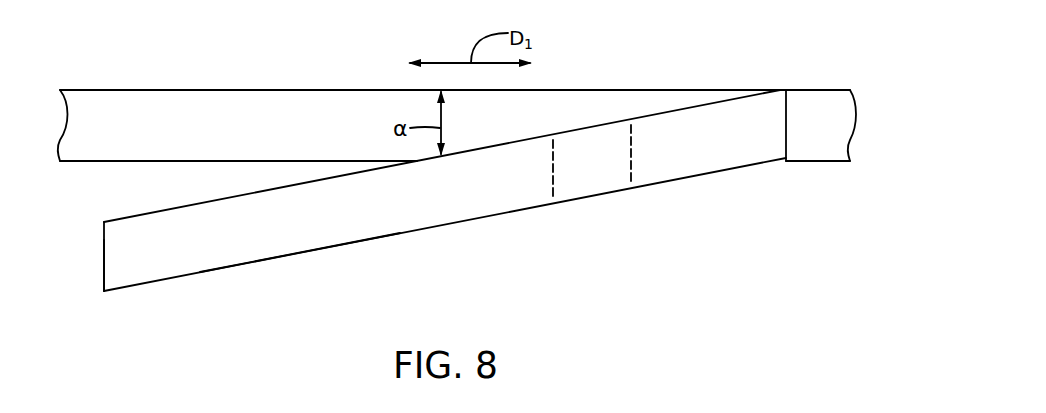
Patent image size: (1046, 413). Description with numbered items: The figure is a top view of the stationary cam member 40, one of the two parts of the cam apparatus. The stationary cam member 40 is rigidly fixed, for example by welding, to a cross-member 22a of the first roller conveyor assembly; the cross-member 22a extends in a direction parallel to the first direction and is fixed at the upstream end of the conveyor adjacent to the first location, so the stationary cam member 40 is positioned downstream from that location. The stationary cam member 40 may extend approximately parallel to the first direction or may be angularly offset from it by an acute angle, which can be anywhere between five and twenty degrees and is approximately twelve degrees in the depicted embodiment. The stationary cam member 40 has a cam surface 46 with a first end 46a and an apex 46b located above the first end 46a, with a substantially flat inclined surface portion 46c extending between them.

The stationary cam member 40 is at (457, 176).
The cross-member 22a is at (219, 128).
The cam surface 46 is at (424, 207).
The first end 46a is at (117, 259).
The apex 46b is at (590, 170).
The inclined surface portion 46c is at (290, 227).